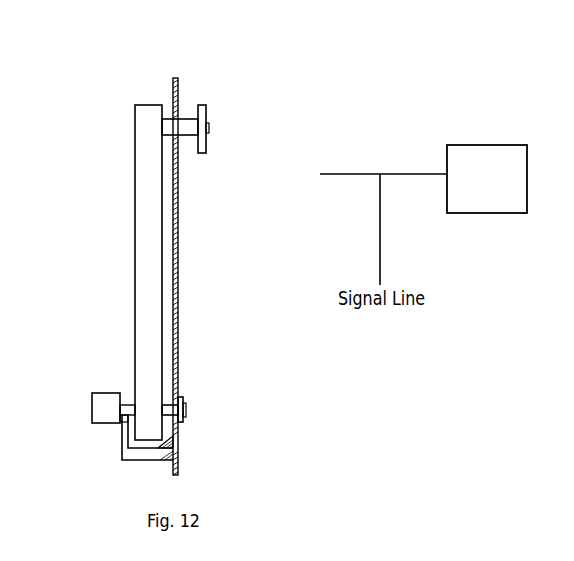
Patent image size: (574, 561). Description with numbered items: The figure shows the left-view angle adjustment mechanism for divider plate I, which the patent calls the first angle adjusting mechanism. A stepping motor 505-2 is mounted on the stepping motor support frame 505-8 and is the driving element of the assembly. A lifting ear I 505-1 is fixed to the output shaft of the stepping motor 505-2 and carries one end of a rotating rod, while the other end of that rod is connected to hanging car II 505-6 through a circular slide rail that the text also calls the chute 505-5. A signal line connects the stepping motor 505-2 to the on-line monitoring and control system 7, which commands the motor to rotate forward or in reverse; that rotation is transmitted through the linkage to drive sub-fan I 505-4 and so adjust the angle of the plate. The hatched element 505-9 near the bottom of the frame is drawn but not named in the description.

The on-line monitoring and control system 7 is at (487, 179).
The lifting ear I 505-1 is at (233, 373).
The stepping motor 505-2 is at (81, 376).
The sub-fan I 505-4 is at (97, 272).
The chute 505-5 is at (125, 241).
The hanging car II 505-6 is at (247, 83).
The stepping motor support frame 505-8 is at (99, 446).
The weld 505-9 is at (230, 456).